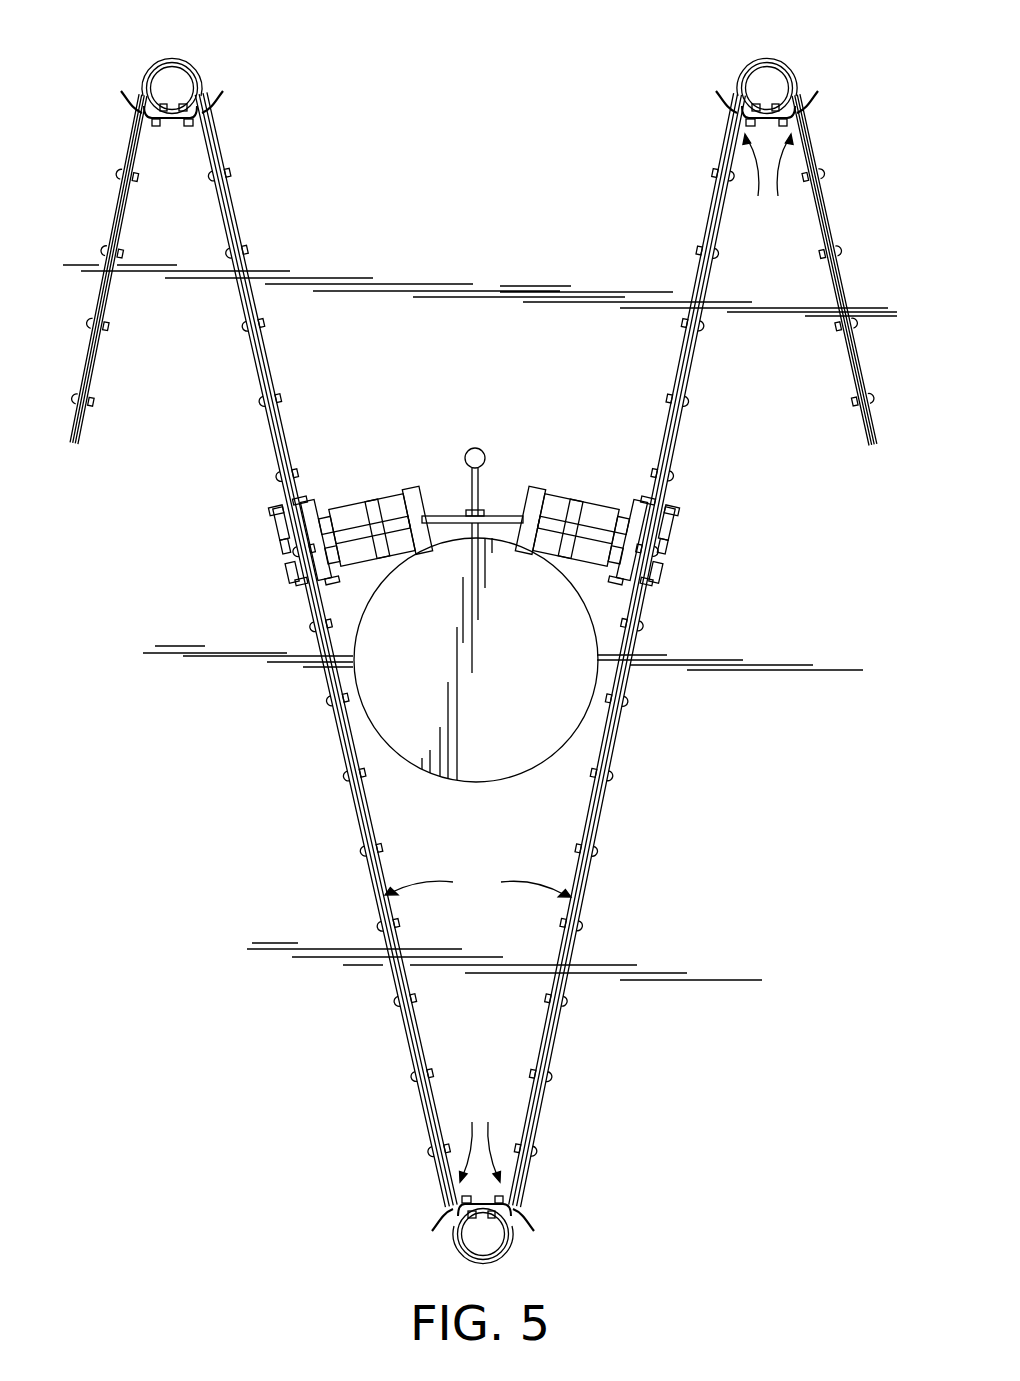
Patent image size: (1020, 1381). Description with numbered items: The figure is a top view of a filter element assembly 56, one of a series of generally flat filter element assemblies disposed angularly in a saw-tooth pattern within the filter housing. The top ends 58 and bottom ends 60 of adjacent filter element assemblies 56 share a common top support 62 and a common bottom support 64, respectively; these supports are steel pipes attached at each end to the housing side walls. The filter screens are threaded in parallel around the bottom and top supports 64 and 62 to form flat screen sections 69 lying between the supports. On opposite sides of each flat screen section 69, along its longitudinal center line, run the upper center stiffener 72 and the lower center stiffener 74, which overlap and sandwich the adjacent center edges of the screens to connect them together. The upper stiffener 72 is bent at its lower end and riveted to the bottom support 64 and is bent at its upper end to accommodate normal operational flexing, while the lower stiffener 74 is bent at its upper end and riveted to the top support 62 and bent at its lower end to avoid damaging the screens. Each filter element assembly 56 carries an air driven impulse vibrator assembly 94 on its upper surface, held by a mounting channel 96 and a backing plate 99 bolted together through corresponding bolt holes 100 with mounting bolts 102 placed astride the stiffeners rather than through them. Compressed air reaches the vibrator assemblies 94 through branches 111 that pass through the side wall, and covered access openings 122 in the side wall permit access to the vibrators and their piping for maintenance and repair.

The filter element assembly 56 is at (478, 883).
The top ends 58 is at (768, 183).
The bottom ends 60 is at (480, 1137).
The top support 62 is at (768, 58).
The bottom support 64 is at (505, 1250).
The flat screen section 69 is at (208, 90).
The upper center stiffener 72 is at (233, 206).
The lower center stiffener 74 is at (221, 214).
The air driven impulse vibrator assembly 94 is at (368, 500).
The mounting channel 96 is at (310, 500).
The backing plate 99 is at (285, 507).
The bolt holes 100 is at (662, 555).
The mounting bolts 102 is at (660, 574).
The branches 111 is at (474, 447).
The covered access openings 122 is at (478, 752).